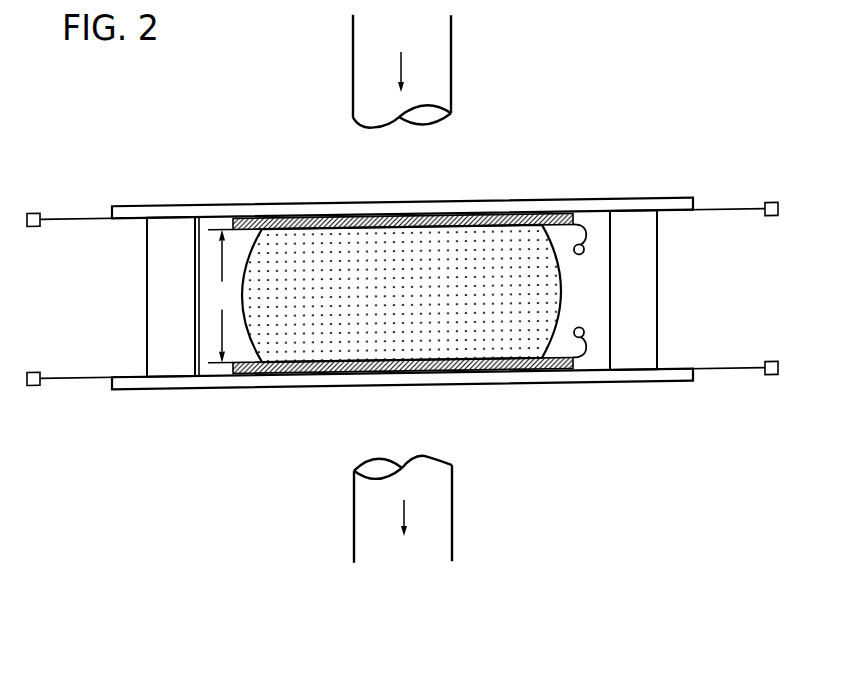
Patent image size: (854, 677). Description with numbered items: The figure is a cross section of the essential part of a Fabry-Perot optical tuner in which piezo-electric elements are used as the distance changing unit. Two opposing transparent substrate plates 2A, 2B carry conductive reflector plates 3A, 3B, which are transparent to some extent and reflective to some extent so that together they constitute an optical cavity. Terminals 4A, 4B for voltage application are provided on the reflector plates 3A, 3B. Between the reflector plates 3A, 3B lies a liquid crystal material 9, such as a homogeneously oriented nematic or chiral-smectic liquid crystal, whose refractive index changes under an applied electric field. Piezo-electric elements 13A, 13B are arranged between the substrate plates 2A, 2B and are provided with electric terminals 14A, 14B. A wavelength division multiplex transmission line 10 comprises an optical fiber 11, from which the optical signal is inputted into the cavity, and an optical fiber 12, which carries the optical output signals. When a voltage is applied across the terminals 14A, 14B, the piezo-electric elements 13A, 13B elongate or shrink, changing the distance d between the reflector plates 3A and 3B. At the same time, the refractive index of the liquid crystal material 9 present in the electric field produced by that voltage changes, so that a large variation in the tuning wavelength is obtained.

The wavelength division multiplex transmission line 10 is at (571, 93).
The optical fiber 11 is at (451, 60).
The optical fiber 12 is at (354, 508).
The transparent substrate plate 2A is at (630, 202).
The transparent substrate plate 2B is at (630, 385).
The reflector plate 3A is at (403, 216).
The reflector plate 3B is at (411, 372).
The terminal 4A is at (584, 250).
The terminal 4B is at (584, 335).
The liquid crystal material 9 is at (560, 280).
The piezo-electric element 13A is at (147, 287).
The piezo-electric element 13B is at (657, 286).
The electric terminal 14A is at (83, 299).
The electric terminal 14B is at (722, 289).
The distance d is at (220, 295).